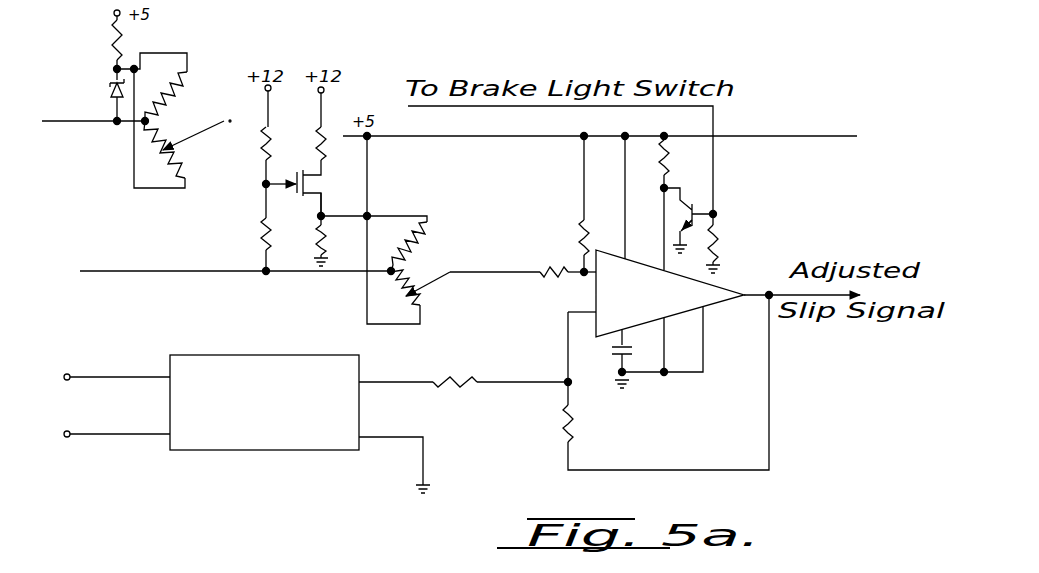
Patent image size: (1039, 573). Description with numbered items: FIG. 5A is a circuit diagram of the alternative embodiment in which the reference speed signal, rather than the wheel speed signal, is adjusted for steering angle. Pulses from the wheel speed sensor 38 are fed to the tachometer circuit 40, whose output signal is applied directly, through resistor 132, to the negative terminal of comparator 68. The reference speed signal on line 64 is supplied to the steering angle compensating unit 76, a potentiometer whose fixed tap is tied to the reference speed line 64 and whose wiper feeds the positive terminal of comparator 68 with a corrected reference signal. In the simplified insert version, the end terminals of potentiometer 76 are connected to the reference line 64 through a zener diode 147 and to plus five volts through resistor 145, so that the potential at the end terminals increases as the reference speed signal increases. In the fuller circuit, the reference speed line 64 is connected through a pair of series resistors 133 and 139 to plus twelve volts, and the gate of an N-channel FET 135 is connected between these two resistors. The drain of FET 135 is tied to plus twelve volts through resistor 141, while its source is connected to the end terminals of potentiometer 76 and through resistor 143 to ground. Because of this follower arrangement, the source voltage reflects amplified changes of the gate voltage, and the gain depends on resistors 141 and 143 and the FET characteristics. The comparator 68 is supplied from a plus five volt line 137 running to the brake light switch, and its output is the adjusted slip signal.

The resistor 145 is at (114, 44).
The zener diode 147 is at (112, 90).
The reference speed signal line 64 is at (110, 123).
The resistor 133 is at (264, 158).
The resistor 139 is at (262, 230).
The resistor 141 is at (318, 142).
The resistor 143 is at (318, 240).
The N-channel FET 135 is at (326, 186).
The steering angle compensating unit (potentiometer) 76 is at (440, 258).
The +5 supply line to brake light switch 137 is at (793, 126).
The resistor 132 is at (462, 376).
The comparator 68 is at (722, 298).
The tachometer circuit 40 is at (297, 451).
The wheel speed sensor 38 is at (104, 420).